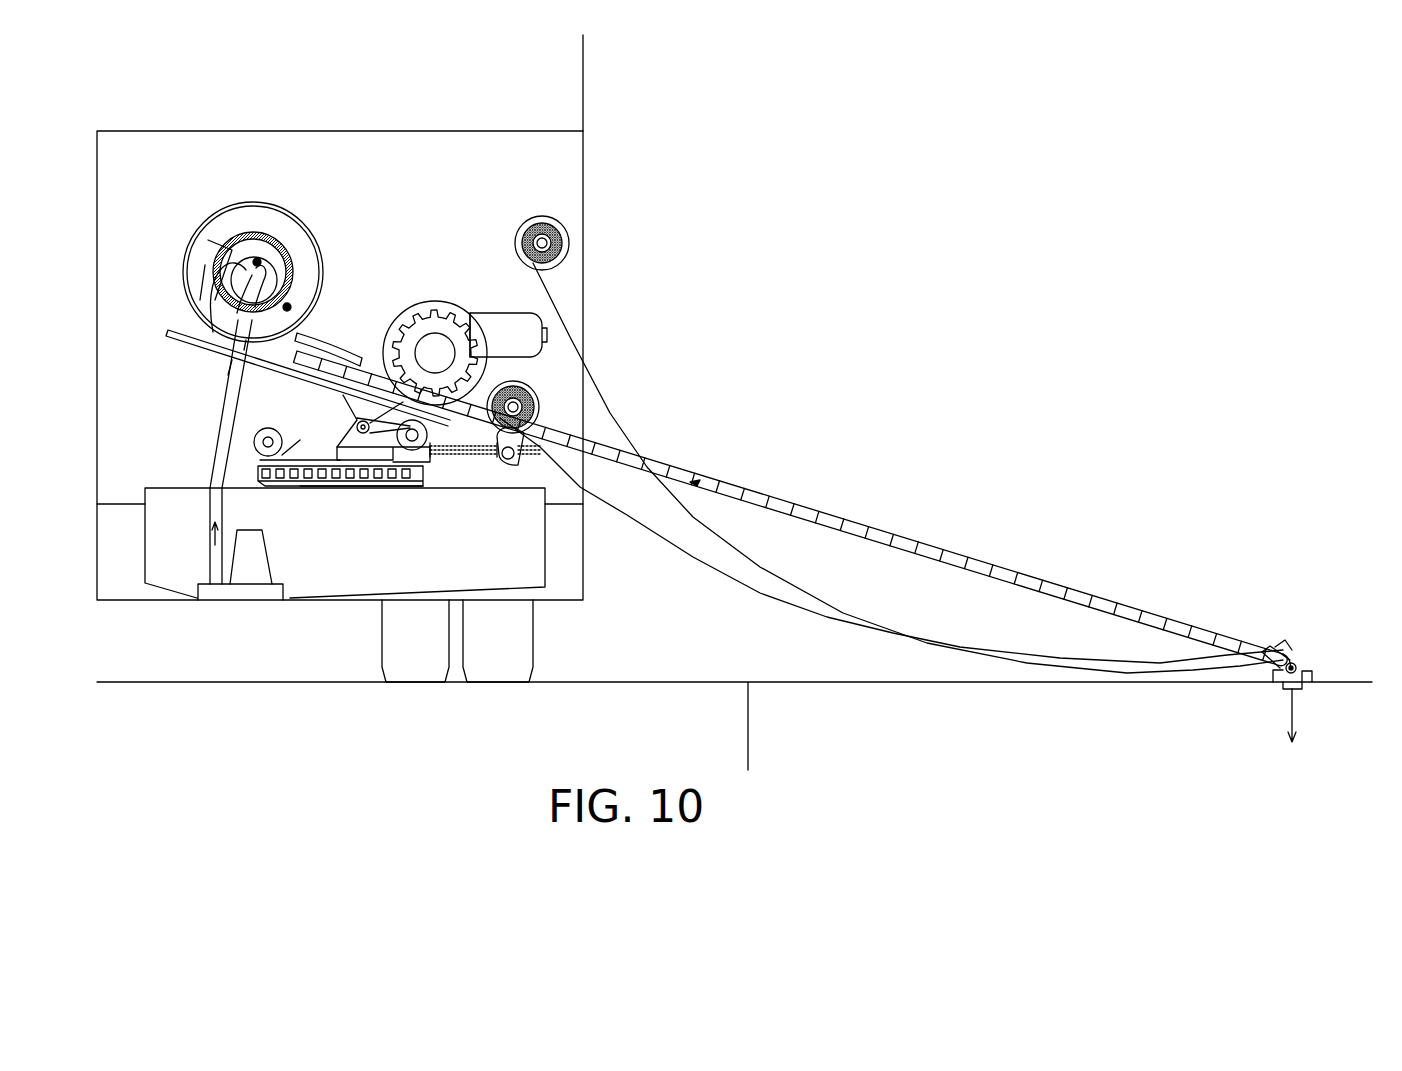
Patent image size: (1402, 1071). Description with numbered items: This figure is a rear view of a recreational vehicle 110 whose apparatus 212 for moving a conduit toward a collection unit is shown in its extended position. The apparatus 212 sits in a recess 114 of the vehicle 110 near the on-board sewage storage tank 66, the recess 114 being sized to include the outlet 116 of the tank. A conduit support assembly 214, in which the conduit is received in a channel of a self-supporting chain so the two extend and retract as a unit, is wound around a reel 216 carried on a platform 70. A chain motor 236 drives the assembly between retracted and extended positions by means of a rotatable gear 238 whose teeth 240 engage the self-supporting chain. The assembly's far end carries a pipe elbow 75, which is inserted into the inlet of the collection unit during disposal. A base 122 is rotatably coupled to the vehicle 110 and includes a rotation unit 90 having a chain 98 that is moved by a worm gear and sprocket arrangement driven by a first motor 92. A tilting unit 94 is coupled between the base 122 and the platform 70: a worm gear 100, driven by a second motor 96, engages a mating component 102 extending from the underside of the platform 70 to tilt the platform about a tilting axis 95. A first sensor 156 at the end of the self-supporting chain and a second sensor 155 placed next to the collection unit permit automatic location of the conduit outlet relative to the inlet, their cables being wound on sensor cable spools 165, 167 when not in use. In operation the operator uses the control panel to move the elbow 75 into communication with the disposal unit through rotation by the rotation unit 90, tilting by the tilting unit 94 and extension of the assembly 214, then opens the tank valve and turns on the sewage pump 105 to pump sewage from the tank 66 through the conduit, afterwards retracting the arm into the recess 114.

The recreational vehicle 110 is at (305, 107).
The recess 114 is at (548, 168).
The reel 216 is at (258, 222).
The sensor cable spool 165 is at (568, 228).
The apparatus 212 is at (628, 266).
The teeth 240 is at (441, 312).
The chain motor 236 is at (528, 322).
The rotatable gear 238 is at (558, 363).
The sensor cable spool 167 is at (540, 396).
The platform 70 is at (166, 336).
The rotation unit 90 is at (318, 440).
The first motor 92 is at (254, 438).
The chain 98 is at (258, 470).
The outlet 116 is at (208, 490).
The tilting axis 95 is at (357, 420).
The tilting unit 94 is at (340, 440).
The sewage pump 105 is at (265, 542).
The sewage storage tank 66 is at (384, 575).
The second motor 96 is at (406, 487).
The base 122 is at (436, 472).
The mating component 102 is at (513, 465).
The worm gear 100 is at (527, 425).
The conduit support assembly 214 is at (920, 550).
The pipe elbow 75 is at (1312, 672).
The second sensor 155 is at (1270, 676).
The first sensor 156 is at (1289, 676).